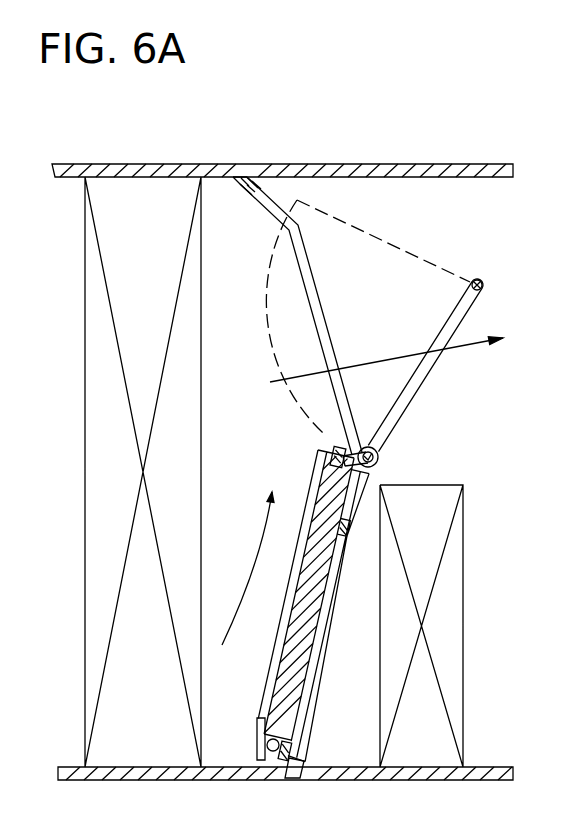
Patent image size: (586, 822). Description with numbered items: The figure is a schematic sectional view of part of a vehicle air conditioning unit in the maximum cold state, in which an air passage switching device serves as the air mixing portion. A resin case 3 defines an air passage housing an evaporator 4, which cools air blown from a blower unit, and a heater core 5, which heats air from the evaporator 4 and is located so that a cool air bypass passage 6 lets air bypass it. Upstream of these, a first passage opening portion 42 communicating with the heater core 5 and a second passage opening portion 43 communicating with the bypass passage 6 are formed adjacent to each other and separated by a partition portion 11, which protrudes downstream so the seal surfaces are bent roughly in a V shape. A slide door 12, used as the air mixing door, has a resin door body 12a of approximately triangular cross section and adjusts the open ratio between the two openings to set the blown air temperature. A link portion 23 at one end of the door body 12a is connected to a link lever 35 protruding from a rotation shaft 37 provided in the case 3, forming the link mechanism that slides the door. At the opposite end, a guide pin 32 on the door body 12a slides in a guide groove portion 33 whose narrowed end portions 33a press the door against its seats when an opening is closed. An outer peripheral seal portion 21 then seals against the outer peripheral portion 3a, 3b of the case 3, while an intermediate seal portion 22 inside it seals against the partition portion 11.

The case 3 is at (427, 170).
The outer peripheral portion 3a is at (303, 770).
The outer peripheral portion 3b is at (256, 183).
The evaporator 4 is at (150, 735).
The heater core 5 is at (440, 735).
The cool air bypass passage 6 is at (444, 430).
The partition portion 11 is at (372, 480).
The slide door 12 is at (281, 595).
The door body 12a is at (308, 487).
The outer peripheral seal portion 21 is at (332, 447).
The intermediate seal portion 22 is at (347, 522).
The link portion 23 is at (366, 447).
The guide pin 32 is at (257, 752).
The guide groove portion 33 is at (276, 695).
The narrow portion 33a is at (271, 740).
The link lever 35 is at (442, 327).
The rotation shaft 37 is at (486, 284).
The first passage opening portion 42 is at (322, 668).
The second passage opening portion 43 is at (308, 266).